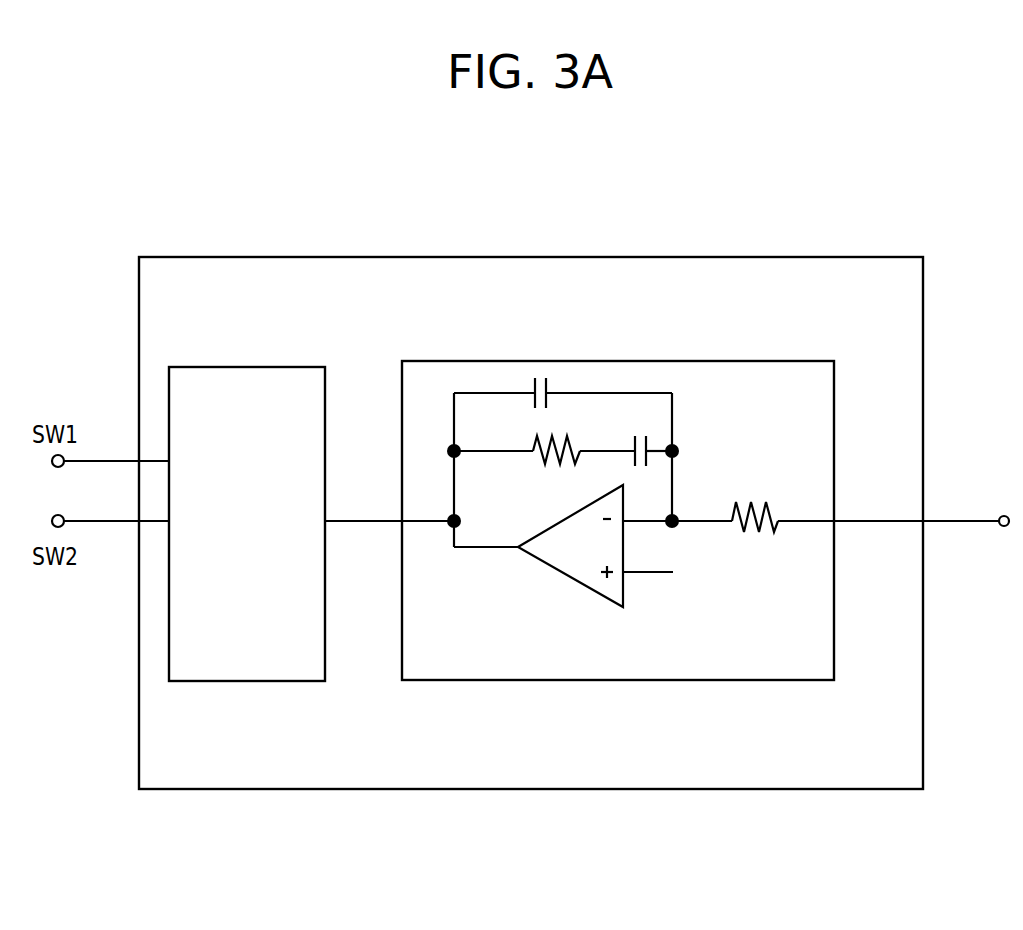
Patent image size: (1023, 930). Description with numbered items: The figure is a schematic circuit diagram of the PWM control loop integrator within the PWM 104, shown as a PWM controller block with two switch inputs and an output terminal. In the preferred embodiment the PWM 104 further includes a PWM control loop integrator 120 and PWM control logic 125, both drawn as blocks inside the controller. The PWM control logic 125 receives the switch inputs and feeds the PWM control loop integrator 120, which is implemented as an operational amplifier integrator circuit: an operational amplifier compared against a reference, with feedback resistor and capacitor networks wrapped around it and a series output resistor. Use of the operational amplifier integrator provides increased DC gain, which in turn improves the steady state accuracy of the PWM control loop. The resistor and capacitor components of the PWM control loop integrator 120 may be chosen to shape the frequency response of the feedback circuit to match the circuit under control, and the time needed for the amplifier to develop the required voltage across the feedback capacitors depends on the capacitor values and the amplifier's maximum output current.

The PWM 104 is at (878, 175).
The PWM control loop integrator 120 is at (713, 361).
The PWM control logic 125 is at (257, 367).